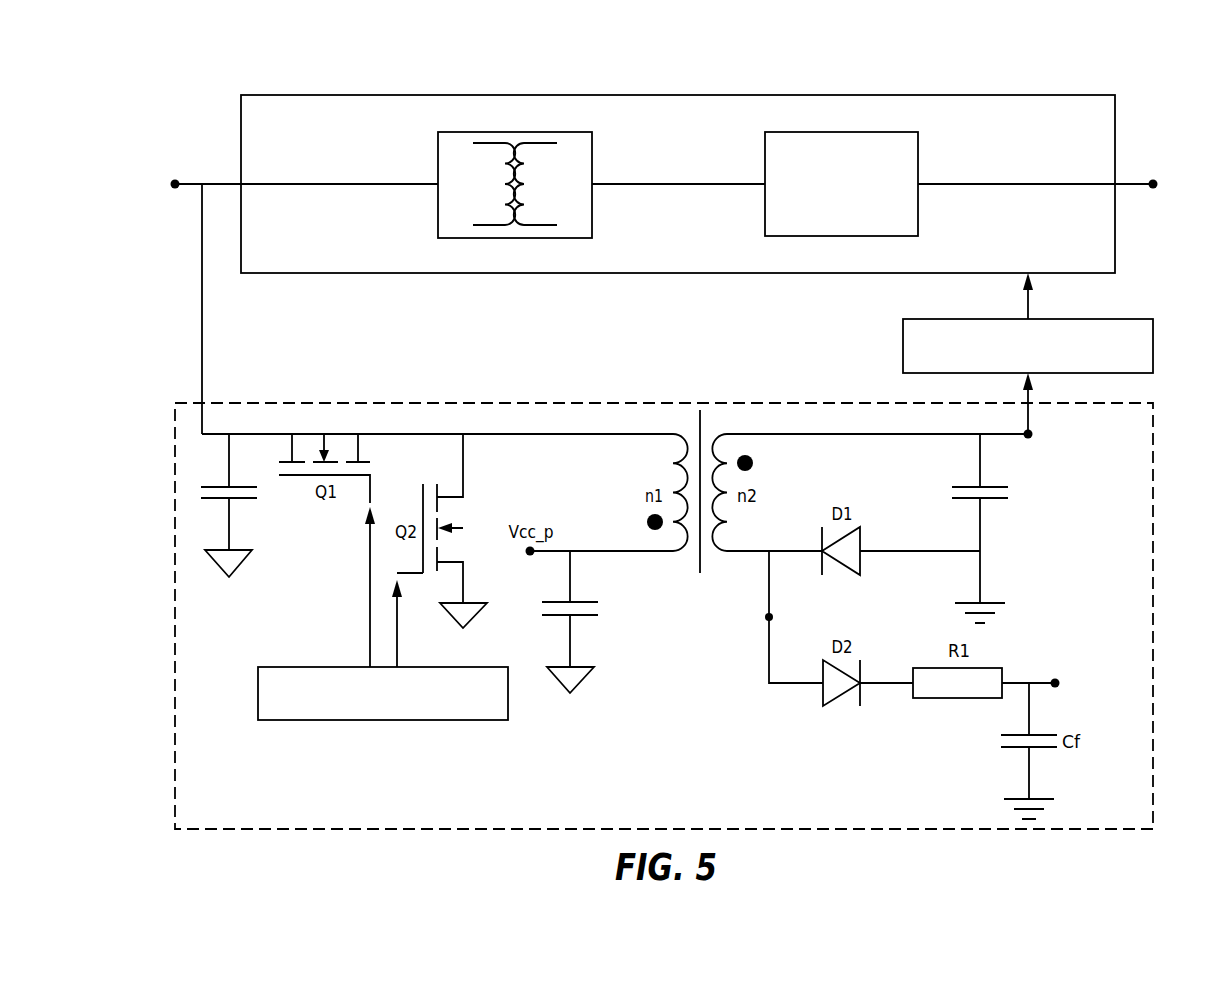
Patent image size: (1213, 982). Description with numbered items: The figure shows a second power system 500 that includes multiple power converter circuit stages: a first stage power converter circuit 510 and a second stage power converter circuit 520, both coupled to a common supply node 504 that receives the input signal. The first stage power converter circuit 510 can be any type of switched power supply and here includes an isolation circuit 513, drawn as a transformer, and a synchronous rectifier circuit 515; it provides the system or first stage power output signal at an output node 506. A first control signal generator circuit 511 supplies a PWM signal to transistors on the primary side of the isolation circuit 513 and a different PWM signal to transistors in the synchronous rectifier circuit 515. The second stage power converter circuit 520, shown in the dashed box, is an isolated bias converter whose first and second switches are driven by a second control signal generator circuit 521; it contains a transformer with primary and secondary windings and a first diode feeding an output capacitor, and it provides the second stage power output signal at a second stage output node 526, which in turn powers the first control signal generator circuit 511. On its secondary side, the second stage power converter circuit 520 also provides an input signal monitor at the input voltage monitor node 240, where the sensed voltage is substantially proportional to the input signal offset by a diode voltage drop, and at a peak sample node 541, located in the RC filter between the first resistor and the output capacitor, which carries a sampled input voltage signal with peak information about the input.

The second power system 500 is at (197, 67).
The common supply node 504 is at (171, 188).
The output node 506 is at (1156, 188).
The first stage power converter circuit 510 is at (680, 94).
The first control signal generator circuit 511 is at (1088, 319).
The isolation circuit 513 is at (516, 131).
The synchronous rectifier circuit 515 is at (843, 131).
The second stage power converter circuit 520 is at (665, 402).
The second control signal generator circuit 521 is at (304, 666).
The second stage output node 526 is at (1032, 440).
The input voltage monitor node 240 is at (774, 617).
The peak sample node 541 is at (1059, 688).